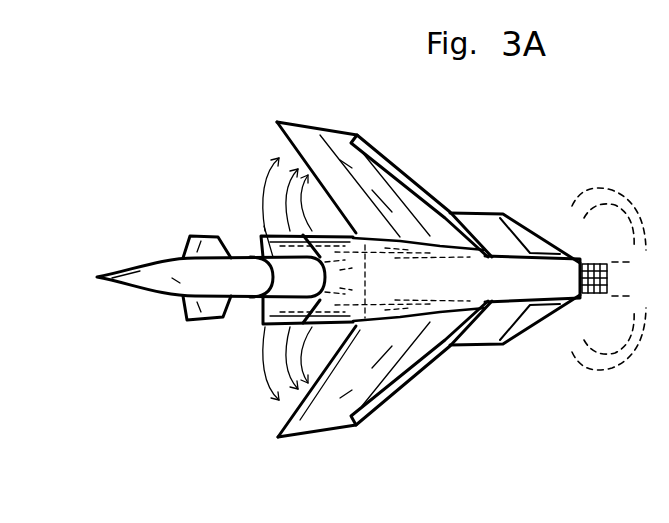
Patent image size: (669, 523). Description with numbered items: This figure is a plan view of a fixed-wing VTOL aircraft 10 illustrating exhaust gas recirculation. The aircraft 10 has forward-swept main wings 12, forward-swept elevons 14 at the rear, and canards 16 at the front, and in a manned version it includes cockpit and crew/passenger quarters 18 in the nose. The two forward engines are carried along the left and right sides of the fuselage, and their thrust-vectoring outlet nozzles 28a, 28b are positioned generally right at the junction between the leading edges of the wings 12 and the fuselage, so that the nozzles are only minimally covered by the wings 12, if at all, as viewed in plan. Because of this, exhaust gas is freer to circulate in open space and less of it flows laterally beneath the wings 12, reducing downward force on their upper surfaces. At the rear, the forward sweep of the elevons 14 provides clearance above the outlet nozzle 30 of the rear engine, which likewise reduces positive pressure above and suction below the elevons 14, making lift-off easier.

The fixed-wing VTOL aircraft 10 is at (147, 160).
The forward-swept main wings 12 is at (307, 139).
The forward-swept elevons 14 is at (487, 226).
The canards 16 is at (189, 240).
The cockpit and crew/passenger quarters 18 is at (168, 294).
The thrust-vectoring outlet nozzle 28a is at (302, 375).
The thrust-vectoring outlet nozzle 28b is at (279, 158).
The thrust-vectoring outlet nozzle 30 is at (600, 266).